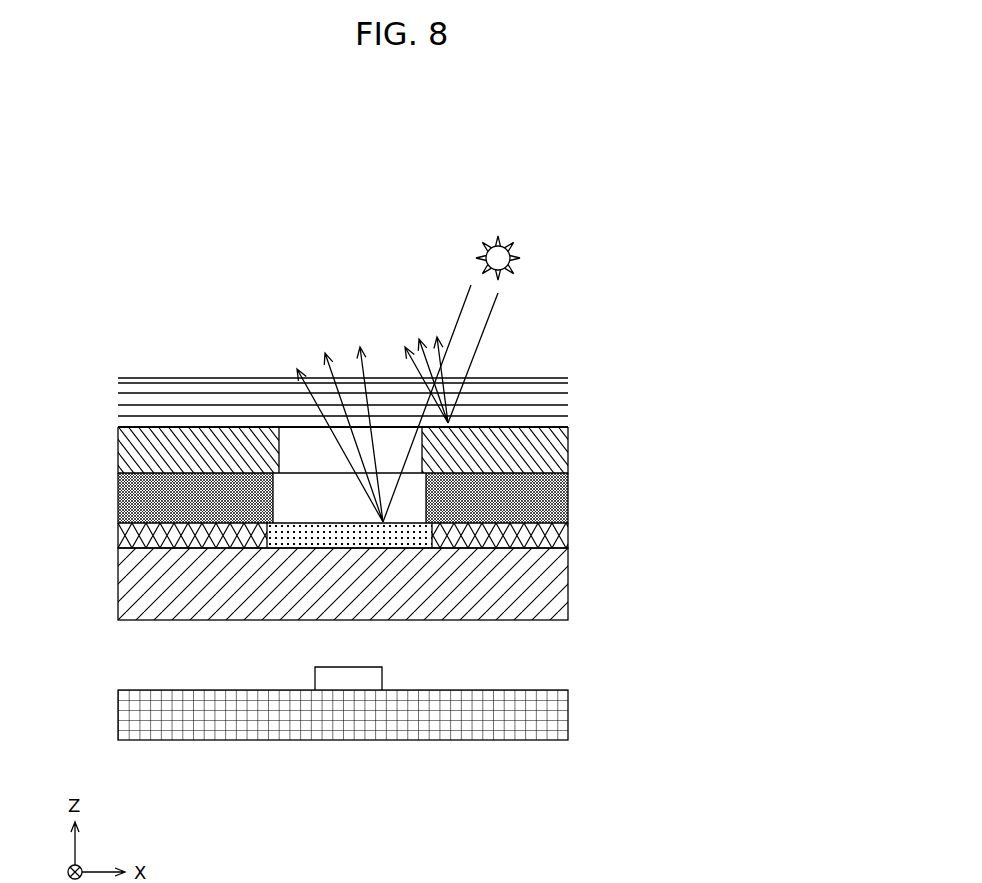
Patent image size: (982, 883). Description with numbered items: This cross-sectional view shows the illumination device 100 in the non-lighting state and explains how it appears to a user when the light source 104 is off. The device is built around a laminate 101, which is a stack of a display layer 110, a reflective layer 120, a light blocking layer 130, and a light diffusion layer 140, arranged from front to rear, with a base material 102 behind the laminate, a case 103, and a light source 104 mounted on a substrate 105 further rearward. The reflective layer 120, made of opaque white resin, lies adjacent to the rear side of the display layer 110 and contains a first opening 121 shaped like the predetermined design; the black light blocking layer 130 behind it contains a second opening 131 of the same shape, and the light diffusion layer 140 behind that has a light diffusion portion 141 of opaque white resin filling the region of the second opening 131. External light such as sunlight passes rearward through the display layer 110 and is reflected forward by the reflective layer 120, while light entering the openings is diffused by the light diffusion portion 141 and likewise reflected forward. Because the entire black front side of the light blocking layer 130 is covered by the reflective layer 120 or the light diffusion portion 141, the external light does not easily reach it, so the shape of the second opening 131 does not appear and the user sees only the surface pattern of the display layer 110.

The illumination device 100 is at (536, 340).
The laminate 101 is at (685, 393).
The base material 102 is at (560, 583).
The case 103 is at (545, 651).
The light source 104 is at (382, 674).
The substrate 105 is at (560, 713).
The display layer 110 is at (568, 405).
The reflective layer 120 is at (568, 457).
The first opening 121 is at (289, 440).
The light blocking layer 130 is at (568, 495).
The second opening 131 is at (290, 505).
The light diffusion layer 140 is at (568, 537).
The light diffusion portion 141 is at (383, 533).